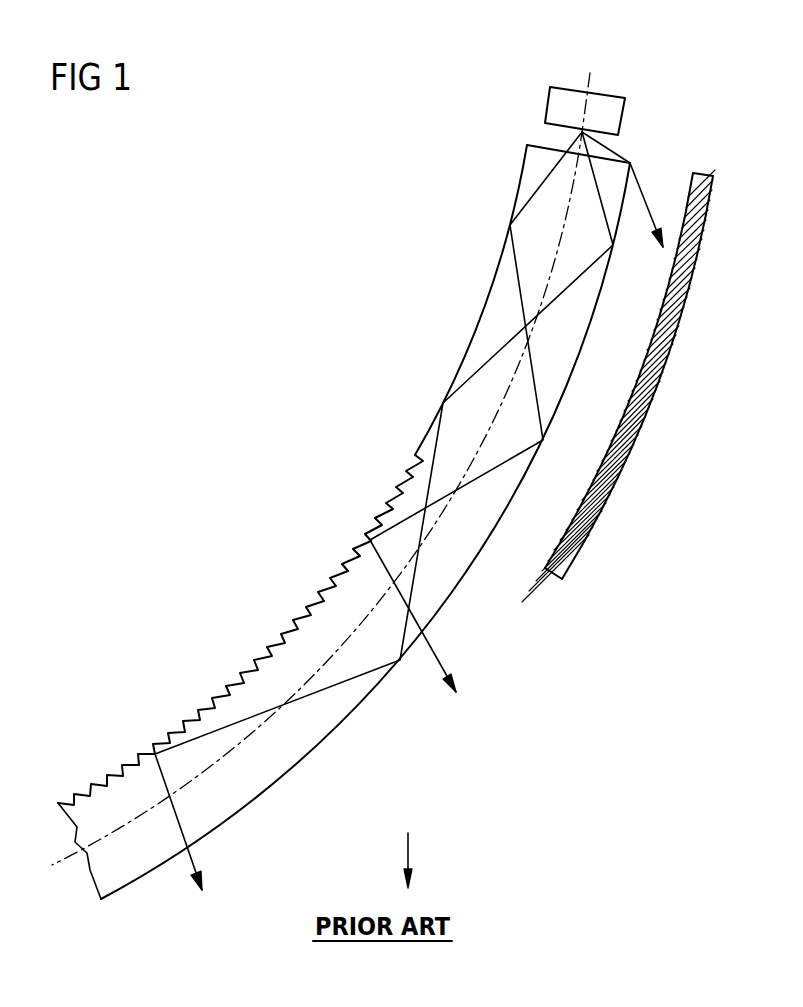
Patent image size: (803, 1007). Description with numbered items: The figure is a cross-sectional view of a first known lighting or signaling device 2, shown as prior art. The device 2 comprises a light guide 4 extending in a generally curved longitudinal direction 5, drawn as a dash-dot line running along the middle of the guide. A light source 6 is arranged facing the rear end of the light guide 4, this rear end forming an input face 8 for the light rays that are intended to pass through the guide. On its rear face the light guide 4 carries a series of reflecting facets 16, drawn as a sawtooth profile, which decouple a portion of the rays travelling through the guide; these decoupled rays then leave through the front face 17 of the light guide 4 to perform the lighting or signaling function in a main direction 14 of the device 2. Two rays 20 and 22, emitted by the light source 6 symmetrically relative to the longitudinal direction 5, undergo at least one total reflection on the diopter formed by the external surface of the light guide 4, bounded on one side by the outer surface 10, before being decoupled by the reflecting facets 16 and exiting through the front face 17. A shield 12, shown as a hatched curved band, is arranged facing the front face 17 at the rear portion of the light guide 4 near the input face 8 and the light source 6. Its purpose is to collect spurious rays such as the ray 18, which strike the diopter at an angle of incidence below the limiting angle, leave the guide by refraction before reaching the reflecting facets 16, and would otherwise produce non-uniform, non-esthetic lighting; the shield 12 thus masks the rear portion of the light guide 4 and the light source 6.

The lighting or signaling device 2 is at (250, 279).
The light guide 4 is at (344, 500).
The longitudinal direction 5 is at (592, 78).
The light source 6 is at (551, 106).
The input face 8 is at (535, 147).
The first surface of light guide 10 is at (480, 320).
The shield 12 is at (606, 486).
The main direction 14 is at (410, 846).
The reflecting facets 16 is at (308, 618).
The front face 17 is at (349, 717).
The spurious ray 18 is at (614, 150).
The light ray 20 is at (550, 172).
The light ray 22 is at (598, 188).